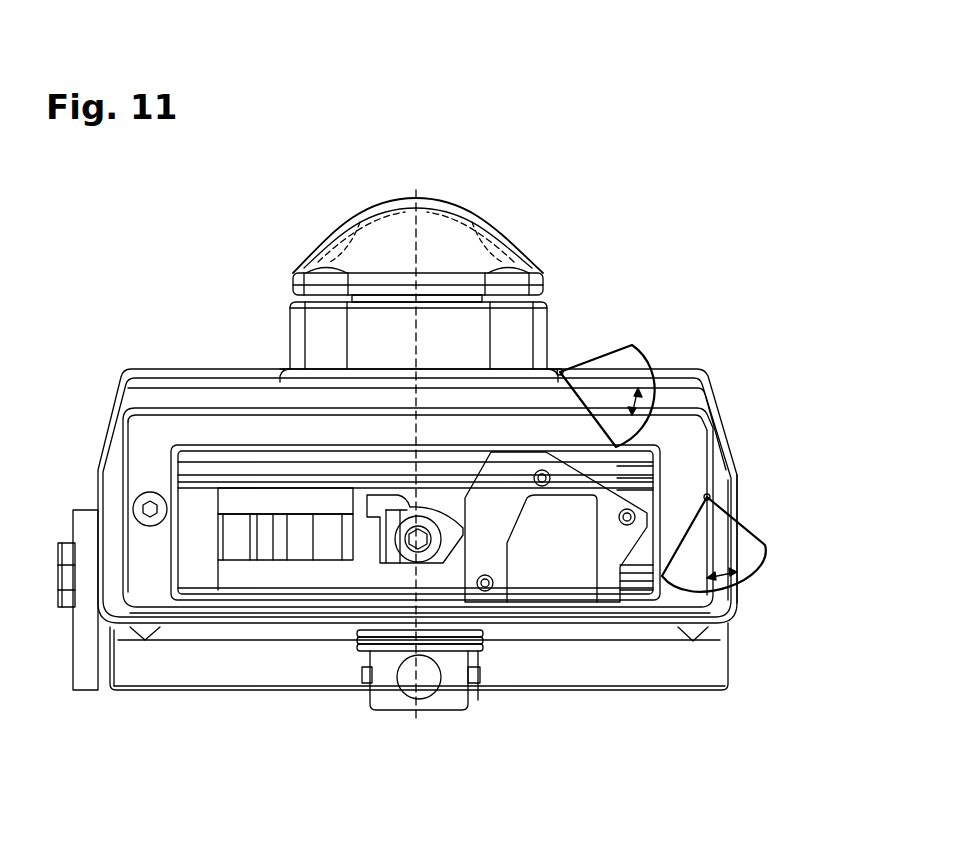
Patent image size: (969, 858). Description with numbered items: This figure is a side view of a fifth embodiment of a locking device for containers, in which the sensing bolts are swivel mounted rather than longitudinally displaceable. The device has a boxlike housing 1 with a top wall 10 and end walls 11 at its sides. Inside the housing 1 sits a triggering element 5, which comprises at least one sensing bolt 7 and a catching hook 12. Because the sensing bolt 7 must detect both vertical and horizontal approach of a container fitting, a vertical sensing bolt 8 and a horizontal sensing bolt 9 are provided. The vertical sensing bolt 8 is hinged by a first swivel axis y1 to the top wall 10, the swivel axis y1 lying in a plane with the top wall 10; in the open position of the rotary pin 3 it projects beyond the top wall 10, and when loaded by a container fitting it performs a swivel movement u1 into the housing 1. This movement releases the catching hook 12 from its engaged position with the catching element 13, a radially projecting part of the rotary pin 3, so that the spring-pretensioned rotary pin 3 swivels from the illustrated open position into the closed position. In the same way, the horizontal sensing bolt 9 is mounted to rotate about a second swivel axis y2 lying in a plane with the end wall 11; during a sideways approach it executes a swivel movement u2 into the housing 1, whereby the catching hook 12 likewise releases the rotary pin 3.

The housing 1 is at (103, 370).
The rotary pin 3 is at (498, 213).
The triggering element 5 is at (551, 570).
The sensing bolt 7 is at (692, 469).
The vertical sensing bolt 8 is at (605, 365).
The horizontal sensing bolt 9 is at (747, 560).
The top wall 10 is at (168, 366).
The end wall 11 is at (737, 475).
The catching hook 12 is at (392, 500).
The catching element 13 is at (407, 566).
The swivel movement u1 is at (648, 365).
The swivel movement u2 is at (743, 587).
The first swivel axis y1 is at (560, 372).
The second swivel axis y2 is at (707, 497).